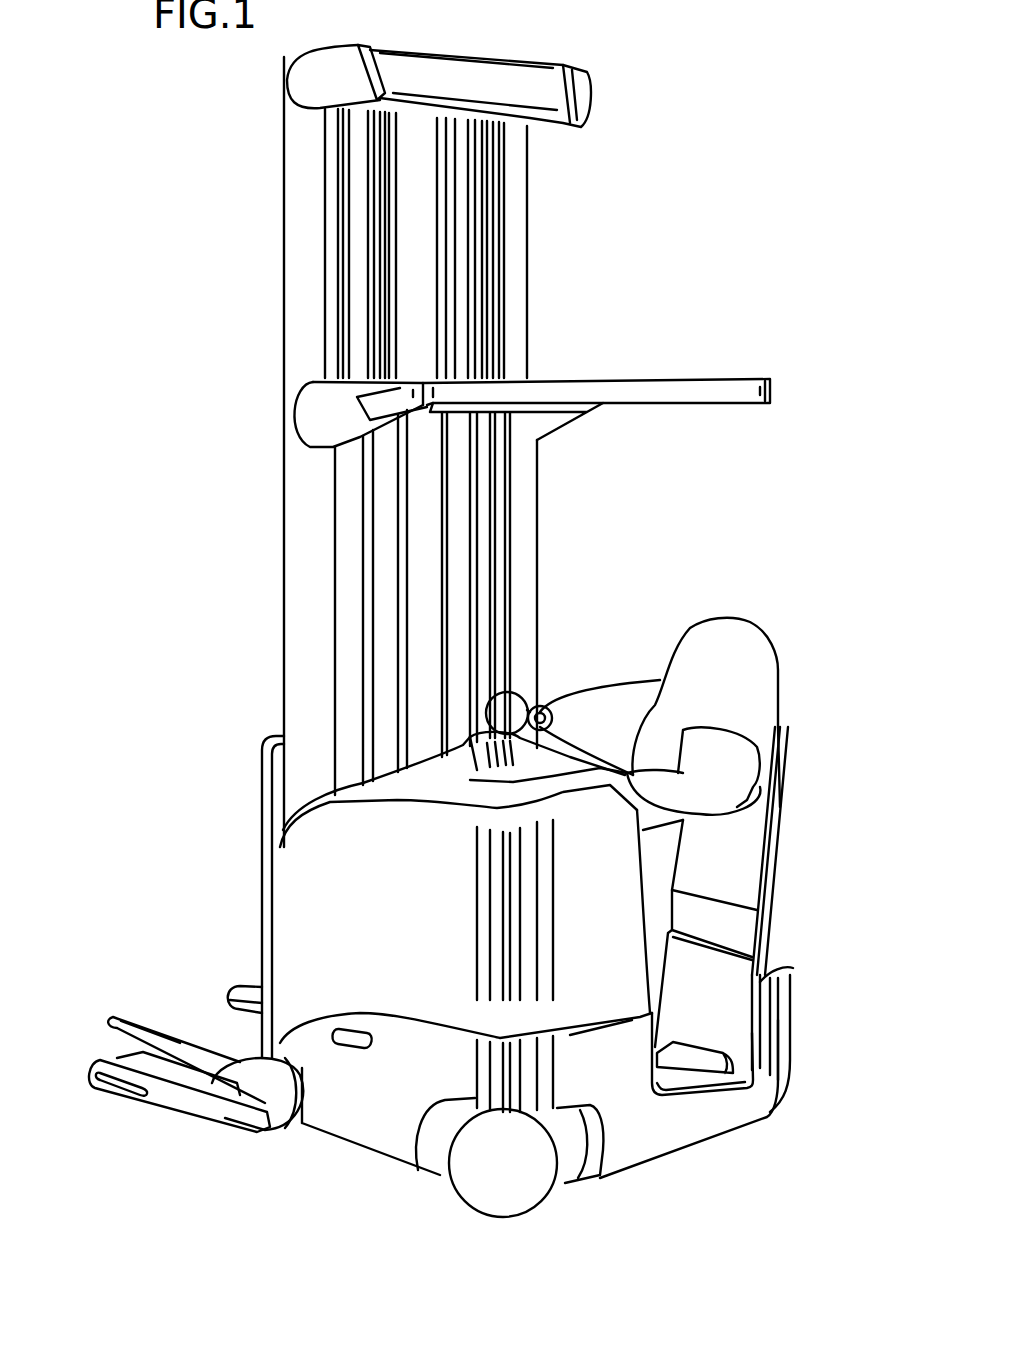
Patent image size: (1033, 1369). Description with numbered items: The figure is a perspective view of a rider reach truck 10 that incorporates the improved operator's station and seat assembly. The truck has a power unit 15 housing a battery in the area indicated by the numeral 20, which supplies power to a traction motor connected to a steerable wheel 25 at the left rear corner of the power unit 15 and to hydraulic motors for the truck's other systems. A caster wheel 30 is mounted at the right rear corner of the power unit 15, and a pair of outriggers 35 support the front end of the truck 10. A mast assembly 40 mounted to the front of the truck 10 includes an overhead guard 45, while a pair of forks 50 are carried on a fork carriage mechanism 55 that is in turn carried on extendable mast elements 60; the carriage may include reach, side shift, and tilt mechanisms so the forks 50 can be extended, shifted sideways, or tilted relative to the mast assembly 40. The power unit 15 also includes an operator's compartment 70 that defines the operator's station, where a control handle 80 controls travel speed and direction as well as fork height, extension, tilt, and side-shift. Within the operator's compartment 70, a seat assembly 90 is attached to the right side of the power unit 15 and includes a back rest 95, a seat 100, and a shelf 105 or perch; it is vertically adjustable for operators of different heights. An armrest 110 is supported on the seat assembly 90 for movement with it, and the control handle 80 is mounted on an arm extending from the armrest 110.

The rider reach truck 10 is at (728, 600).
The power unit 15 is at (655, 1118).
The battery area 20 is at (398, 985).
The steerable wheel 25 is at (508, 1185).
The caster wheel 30 is at (775, 1090).
The outriggers 35 is at (155, 1100).
The mast assembly 40 is at (272, 533).
The overhead guard 45 is at (772, 387).
The forks 50 is at (178, 1032).
The fork carriage mechanism 55 is at (262, 764).
The extendable mast elements 60 is at (527, 275).
The operator's compartment 70 is at (663, 866).
The control handle 80 is at (530, 702).
The seat assembly 90 is at (758, 620).
The back rest 95 is at (773, 680).
The seat 100 is at (727, 810).
The shelf 105 is at (728, 758).
The armrest 110 is at (607, 690).